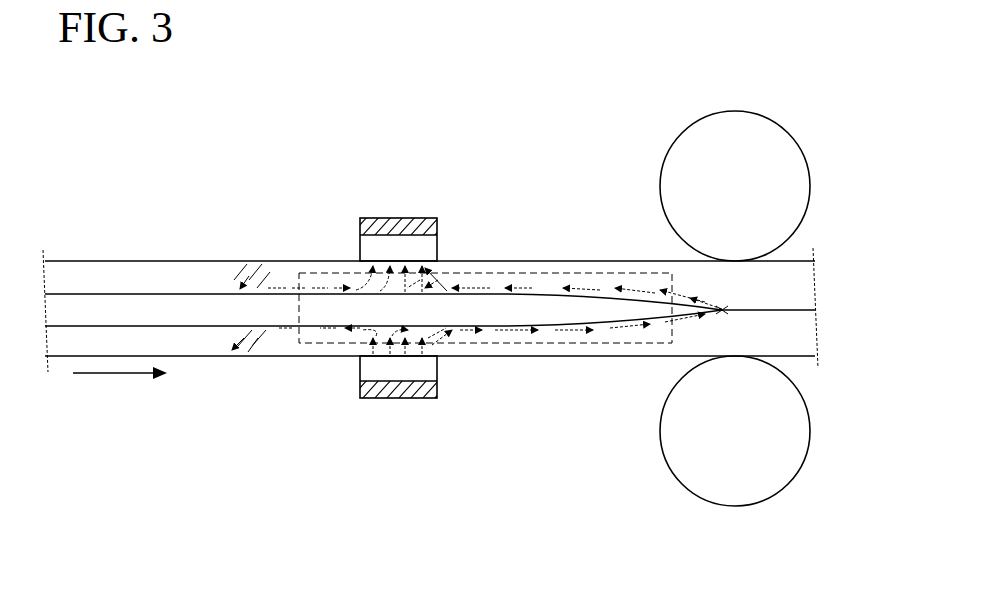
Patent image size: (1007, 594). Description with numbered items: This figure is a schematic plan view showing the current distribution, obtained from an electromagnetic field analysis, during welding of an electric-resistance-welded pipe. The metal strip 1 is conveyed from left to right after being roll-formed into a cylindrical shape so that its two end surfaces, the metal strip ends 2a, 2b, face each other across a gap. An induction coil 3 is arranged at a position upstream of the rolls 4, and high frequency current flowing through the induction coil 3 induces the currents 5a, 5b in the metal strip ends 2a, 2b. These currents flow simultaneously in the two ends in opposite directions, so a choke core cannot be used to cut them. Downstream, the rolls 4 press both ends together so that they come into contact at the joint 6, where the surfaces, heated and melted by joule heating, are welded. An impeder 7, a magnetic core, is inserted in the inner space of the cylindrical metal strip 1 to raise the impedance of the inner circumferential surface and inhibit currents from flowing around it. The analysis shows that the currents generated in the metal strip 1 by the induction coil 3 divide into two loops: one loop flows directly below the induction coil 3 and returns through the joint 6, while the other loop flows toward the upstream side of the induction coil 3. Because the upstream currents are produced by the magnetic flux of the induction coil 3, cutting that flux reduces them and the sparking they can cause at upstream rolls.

The metal strip 1 is at (133, 275).
The metal strip end 2a is at (196, 293).
The metal strip end 2b is at (197, 357).
The induction coil 3 is at (437, 232).
The rolls 4 is at (787, 158).
The current 5a is at (517, 335).
The current 5b is at (525, 286).
The joint 6 is at (725, 308).
The impeder 7 is at (575, 347).